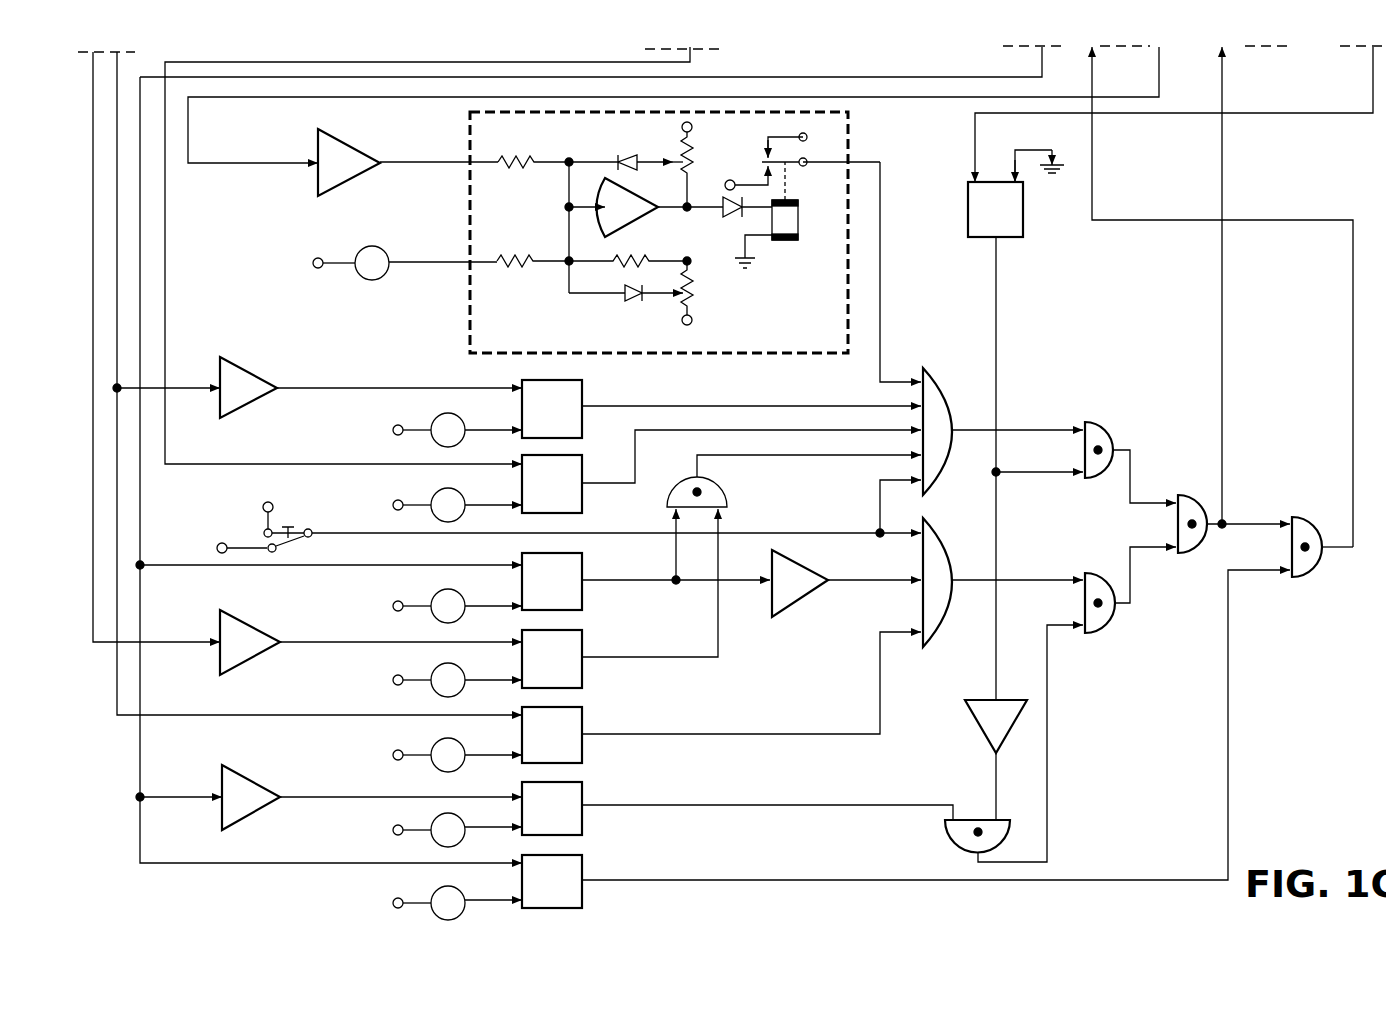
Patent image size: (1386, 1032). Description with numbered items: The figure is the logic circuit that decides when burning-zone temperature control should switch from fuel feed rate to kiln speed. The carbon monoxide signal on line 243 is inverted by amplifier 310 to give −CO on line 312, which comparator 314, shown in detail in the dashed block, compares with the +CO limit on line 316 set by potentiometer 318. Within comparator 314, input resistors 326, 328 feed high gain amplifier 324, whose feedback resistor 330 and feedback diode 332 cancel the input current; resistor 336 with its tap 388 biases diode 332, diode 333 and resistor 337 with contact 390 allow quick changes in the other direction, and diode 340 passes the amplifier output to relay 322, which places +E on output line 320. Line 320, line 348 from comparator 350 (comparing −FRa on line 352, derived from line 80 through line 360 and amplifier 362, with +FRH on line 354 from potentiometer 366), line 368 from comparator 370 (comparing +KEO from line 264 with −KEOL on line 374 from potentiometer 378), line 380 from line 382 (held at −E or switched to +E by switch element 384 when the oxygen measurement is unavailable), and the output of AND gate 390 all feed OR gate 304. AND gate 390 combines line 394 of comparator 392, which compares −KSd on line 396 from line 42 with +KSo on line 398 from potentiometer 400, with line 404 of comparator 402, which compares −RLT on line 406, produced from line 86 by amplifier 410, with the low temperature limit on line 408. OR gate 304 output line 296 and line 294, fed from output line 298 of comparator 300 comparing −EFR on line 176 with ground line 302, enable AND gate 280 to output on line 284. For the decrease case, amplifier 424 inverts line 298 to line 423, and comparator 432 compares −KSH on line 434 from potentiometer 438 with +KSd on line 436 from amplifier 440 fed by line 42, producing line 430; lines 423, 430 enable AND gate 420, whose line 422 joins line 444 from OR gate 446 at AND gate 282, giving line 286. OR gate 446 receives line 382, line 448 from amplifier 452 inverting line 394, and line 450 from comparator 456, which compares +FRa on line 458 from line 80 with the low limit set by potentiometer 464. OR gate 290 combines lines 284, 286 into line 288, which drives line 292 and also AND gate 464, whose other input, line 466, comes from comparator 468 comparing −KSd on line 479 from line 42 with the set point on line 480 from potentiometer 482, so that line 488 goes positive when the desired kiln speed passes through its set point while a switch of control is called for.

The line 42 is at (143, 93).
The line 264 is at (672, 62).
The line 243 is at (188, 132).
The line 292 is at (1222, 78).
The line 488 is at (1092, 78).
The line 176 is at (1373, 78).
The line 86 is at (98, 211).
The line 80 is at (117, 244).
The amplifier 310 is at (365, 135).
The line 312 is at (394, 162).
The potentiometer 318 is at (368, 246).
The line 316 is at (434, 262).
The input resistor 326 is at (524, 148).
The feedback diode 332 is at (622, 153).
The tap 388 is at (676, 158).
The resistor 336 is at (774, 150).
The high gain amplifier 324 is at (626, 190).
The input resistor 328 is at (505, 254).
The feedback resistor 330 is at (625, 256).
The diode 340 is at (724, 218).
The relay 322 is at (798, 215).
The diode 333 is at (623, 312).
The AND gate 390 is at (684, 311).
The resistor 337 is at (691, 299).
The line 320 is at (880, 178).
The line 302 is at (1024, 150).
The comparator 300 is at (968, 204).
The line 298 is at (996, 324).
The line 360 is at (186, 390).
The sign changing amplifier 362 is at (246, 364).
The line 352 is at (334, 390).
The potentiometer 366 is at (436, 420).
The line 354 is at (472, 430).
The comparator 350 is at (582, 383).
The line 348 is at (708, 408).
The comparator 314 is at (788, 355).
The OR gate 304 is at (941, 398).
The line 296 is at (1040, 422).
The AND gate 280 is at (1102, 421).
The output line 284 is at (1130, 466).
The OR gate 290 is at (1200, 484).
The output line 288 is at (1218, 532).
The AND gate 464 is at (1308, 522).
The comparator 370 is at (582, 449).
The line 368 is at (622, 490).
The potentiometer 378 is at (436, 496).
The line 374 is at (474, 506).
The line 380 is at (878, 502).
The line 294 is at (1034, 478).
The AND gate 282 is at (1096, 572).
The output line 286 is at (1130, 584).
The line 382 is at (354, 536).
The switch element 384 is at (296, 541).
The line 396 is at (184, 564).
The comparator 392 is at (582, 553).
The output line 394 is at (612, 588).
The potentiometer 400 is at (436, 596).
The line 398 is at (474, 604).
The OR gate 446 is at (946, 544).
The sign-changing amplifier 452 is at (802, 566).
The line 448 is at (880, 584).
The line 444 is at (1032, 580).
The sign-changing amplifier 410 is at (244, 620).
The line 406 is at (326, 642).
The comparator 402 is at (582, 635).
The line 404 is at (646, 650).
The input line 408 is at (472, 680).
The input line 458 is at (292, 718).
The comparator 456 is at (587, 719).
The line 450 is at (878, 724).
The sign-changing amplifier 424 is at (984, 732).
The line 423 is at (994, 789).
The sign-changing amplifier 440 is at (229, 778).
The input line 436 is at (326, 798).
The potentiometer 438 is at (442, 820).
The comparator 432 is at (582, 789).
The line 430 is at (740, 810).
The input line 434 is at (472, 836).
The AND gate 420 is at (952, 841).
The output line 422 is at (1048, 797).
The line 466 is at (1228, 802).
The line 479 is at (143, 843).
The potentiometer 482 is at (440, 892).
The comparator circuit 468 is at (587, 866).
The line 480 is at (490, 901).